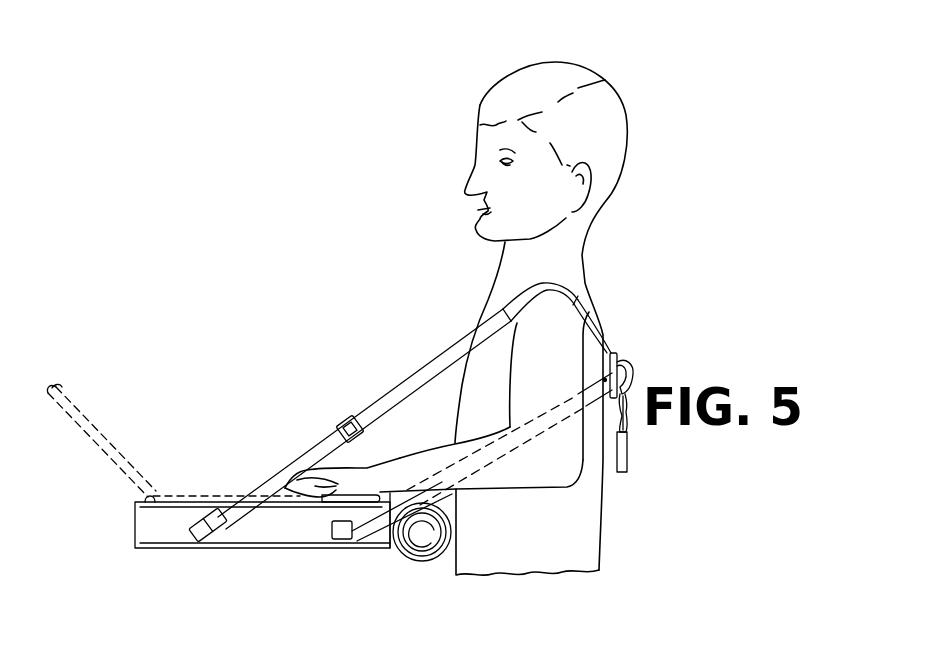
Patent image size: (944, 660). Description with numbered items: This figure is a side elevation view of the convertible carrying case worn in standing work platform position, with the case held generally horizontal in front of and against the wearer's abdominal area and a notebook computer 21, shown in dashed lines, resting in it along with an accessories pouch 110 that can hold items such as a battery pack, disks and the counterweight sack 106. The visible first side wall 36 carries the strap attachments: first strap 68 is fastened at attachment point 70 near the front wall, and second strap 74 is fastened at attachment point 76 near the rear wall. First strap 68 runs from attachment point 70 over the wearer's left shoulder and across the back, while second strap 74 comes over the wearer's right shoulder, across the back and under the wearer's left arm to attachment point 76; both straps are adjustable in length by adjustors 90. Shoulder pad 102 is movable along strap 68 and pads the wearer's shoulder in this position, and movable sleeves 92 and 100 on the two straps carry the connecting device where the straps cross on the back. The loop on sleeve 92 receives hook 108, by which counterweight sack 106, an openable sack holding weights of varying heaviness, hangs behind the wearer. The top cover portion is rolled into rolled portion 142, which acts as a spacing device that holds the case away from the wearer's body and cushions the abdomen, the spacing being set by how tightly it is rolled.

The notebook computer 21 is at (90, 414).
The first side wall 36 is at (290, 541).
The first strap 68 is at (312, 450).
The attachment point 70 is at (208, 537).
The second strap 74 is at (575, 399).
The attachment point 76 is at (335, 539).
The adjustor 90 is at (352, 418).
The movable sleeve 92 is at (618, 357).
The movable sleeve 100 is at (613, 352).
The shoulder pad 102 is at (573, 287).
The counterweight sack 106 is at (628, 463).
The hook 108 is at (632, 378).
The accessories pouch 110 is at (354, 489).
The rolled portion 142 is at (418, 561).